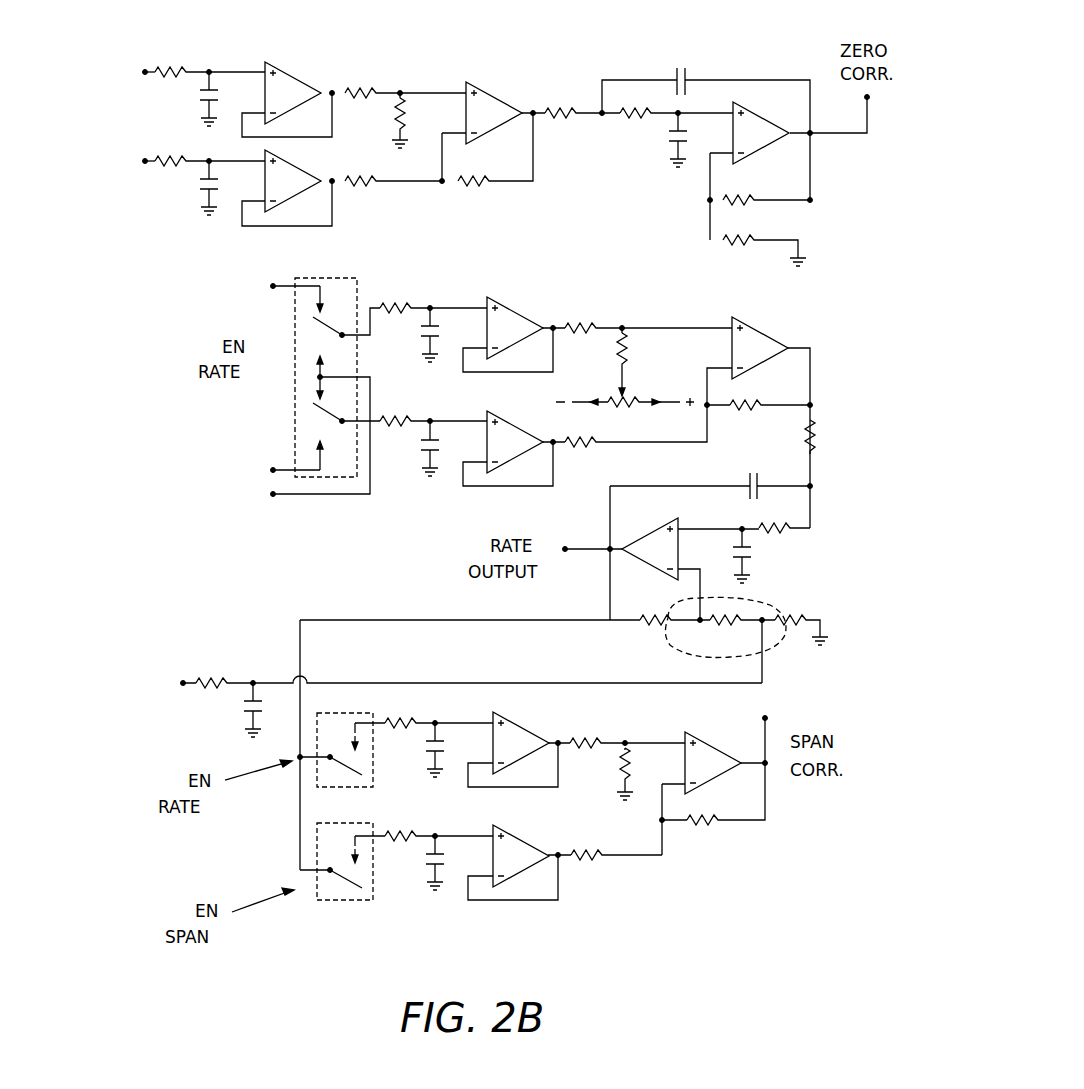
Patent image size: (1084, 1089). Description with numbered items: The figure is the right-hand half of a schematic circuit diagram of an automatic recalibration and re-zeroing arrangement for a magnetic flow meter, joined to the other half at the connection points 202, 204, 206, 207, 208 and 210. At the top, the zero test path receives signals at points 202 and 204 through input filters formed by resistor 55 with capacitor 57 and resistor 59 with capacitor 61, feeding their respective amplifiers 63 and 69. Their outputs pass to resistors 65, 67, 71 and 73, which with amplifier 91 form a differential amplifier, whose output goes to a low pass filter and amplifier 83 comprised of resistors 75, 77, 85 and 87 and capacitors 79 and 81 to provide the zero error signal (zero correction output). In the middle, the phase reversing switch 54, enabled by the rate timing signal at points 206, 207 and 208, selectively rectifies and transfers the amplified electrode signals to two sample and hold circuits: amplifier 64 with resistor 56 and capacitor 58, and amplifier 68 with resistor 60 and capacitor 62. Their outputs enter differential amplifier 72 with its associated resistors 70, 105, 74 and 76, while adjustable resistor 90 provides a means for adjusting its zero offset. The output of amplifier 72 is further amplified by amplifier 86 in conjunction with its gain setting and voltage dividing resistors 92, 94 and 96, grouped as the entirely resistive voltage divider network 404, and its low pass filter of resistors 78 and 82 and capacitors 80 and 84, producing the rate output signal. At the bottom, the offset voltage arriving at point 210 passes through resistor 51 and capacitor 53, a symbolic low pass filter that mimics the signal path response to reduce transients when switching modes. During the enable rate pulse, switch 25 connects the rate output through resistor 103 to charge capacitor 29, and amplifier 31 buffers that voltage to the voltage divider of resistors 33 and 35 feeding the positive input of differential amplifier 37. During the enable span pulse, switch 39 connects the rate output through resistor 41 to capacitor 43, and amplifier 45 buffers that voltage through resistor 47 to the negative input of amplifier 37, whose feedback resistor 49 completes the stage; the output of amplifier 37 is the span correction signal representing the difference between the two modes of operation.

The connection point 202 is at (119, 72).
The connection point 204 is at (119, 161).
The connection point 206 is at (241, 289).
The connection point 207 is at (242, 471).
The connection point 208 is at (241, 498).
The connection point 210 is at (151, 683).
The resistor 55 is at (174, 67).
The capacitor 57 is at (198, 97).
The resistor 59 is at (170, 165).
The capacitor 61 is at (200, 190).
The amplifier 63 is at (288, 80).
The resistor 65 is at (362, 88).
The resistor 67 is at (405, 110).
The amplifier 69 is at (305, 195).
The resistor 71 is at (368, 186).
The resistor 73 is at (478, 187).
The amplifier 91 is at (497, 95).
The resistor 75 is at (569, 105).
The resistor 77 is at (632, 118).
The capacitor 79 is at (688, 66).
The capacitor 81 is at (675, 142).
The amplifier 83 is at (778, 148).
The resistor 85 is at (748, 205).
The resistor 87 is at (735, 245).
The phase reversing switch 54 is at (295, 428).
The resistor 56 is at (398, 302).
The capacitor 58 is at (440, 325).
The resistor 60 is at (408, 419).
The capacitor 62 is at (440, 450).
The amplifier 64 is at (515, 318).
The amplifier 68 is at (518, 470).
The resistor 70 is at (585, 322).
The resistor 74 is at (588, 448).
The resistor 105 is at (629, 345).
The adjustable resistor 90 is at (640, 410).
The differential amplifier 72 is at (760, 340).
The resistor 76 is at (752, 401).
The resistor 78 is at (816, 440).
The capacitor 80 is at (752, 472).
The resistor 82 is at (788, 522).
The capacitor 84 is at (765, 553).
The amplifier 86 is at (660, 540).
The resistor 92 is at (655, 626).
The resistor 94 is at (727, 626).
The resistor 96 is at (805, 616).
The voltage divider network 404 is at (786, 668).
The resistor 51 is at (213, 676).
The capacitor 53 is at (245, 708).
The switch 25 is at (355, 712).
The resistor 103 is at (402, 718).
The capacitor 29 is at (438, 750).
The switch 39 is at (317, 840).
The resistor 41 is at (405, 832).
The capacitor 43 is at (443, 865).
The amplifier 31 is at (520, 730).
The resistor 33 is at (592, 738).
The resistor 35 is at (622, 778).
The differential amplifier 37 is at (704, 748).
The feedback resistor 49 is at (706, 826).
The amplifier 45 is at (520, 880).
The resistor 47 is at (590, 861).